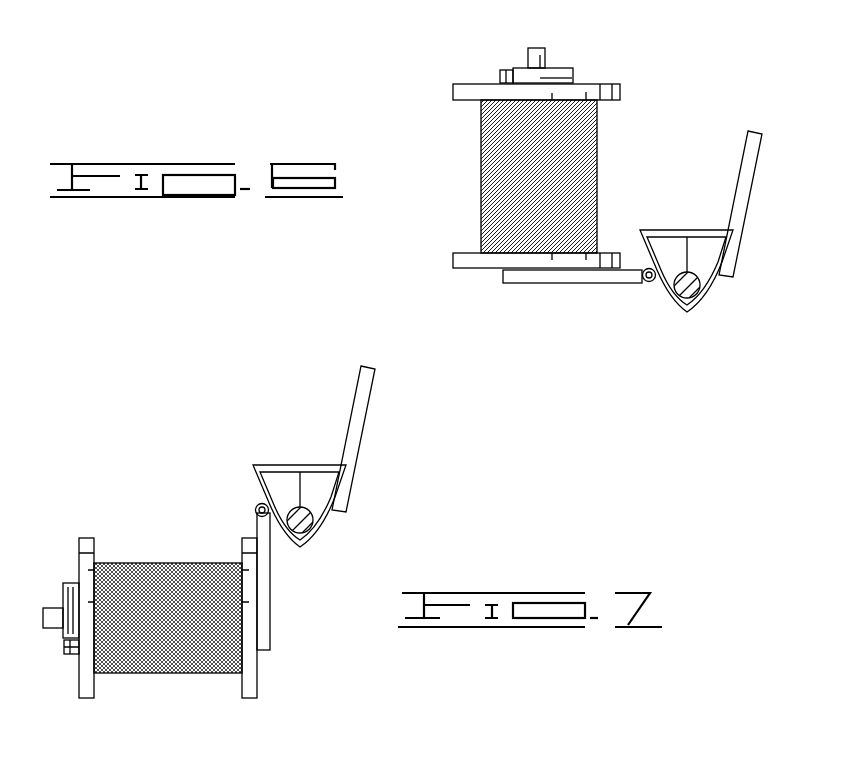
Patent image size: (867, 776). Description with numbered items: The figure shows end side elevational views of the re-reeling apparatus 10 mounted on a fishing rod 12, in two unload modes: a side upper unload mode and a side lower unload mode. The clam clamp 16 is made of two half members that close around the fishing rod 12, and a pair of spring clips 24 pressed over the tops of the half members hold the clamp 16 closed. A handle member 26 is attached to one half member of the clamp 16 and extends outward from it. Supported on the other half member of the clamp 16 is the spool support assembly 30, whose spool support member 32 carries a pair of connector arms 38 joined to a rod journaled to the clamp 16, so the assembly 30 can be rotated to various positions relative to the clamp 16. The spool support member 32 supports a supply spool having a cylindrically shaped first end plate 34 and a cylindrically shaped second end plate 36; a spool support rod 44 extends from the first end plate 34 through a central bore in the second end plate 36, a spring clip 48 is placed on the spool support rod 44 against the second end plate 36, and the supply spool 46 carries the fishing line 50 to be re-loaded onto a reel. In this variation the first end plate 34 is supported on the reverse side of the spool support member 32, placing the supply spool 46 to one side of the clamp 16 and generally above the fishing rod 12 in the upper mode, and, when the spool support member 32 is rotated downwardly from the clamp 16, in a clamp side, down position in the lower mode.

In FIG. 6, the re-reeling apparatus 10 is at (415, 78).
In FIG. 7, the re-reeling apparatus 10 is at (138, 465).
In FIG. 6, the fishing rod 12 is at (690, 295).
In FIG. 7, the fishing rod 12 is at (319, 532).
In FIG. 6, the clam clamp 16 is at (713, 253).
In FIG. 7, the clam clamp 16 is at (329, 503).
In FIG. 6, the spring clips 24 is at (675, 232).
In FIG. 7, the spring clips 24 is at (309, 451).
In FIG. 6, the handle member 26 is at (758, 172).
In FIG. 7, the handle member 26 is at (379, 439).
In FIG. 6, the spool support assembly 30 is at (532, 285).
In FIG. 7, the spool support assembly 30 is at (77, 682).
In FIG. 6, the spool support member 32 is at (597, 285).
In FIG. 7, the spool support member 32 is at (272, 613).
In FIG. 6, the first end plate 34 is at (463, 252).
In FIG. 7, the first end plate 34 is at (258, 682).
In FIG. 6, the second end plate 36 is at (622, 90).
In FIG. 7, the second end plate 36 is at (95, 542).
In FIG. 6, the connector arms 38 is at (637, 288).
In FIG. 7, the connector arms 38 is at (262, 510).
In FIG. 6, the spool support rod 44 is at (528, 55).
In FIG. 7, the spool support rod 44 is at (55, 628).
In FIG. 6, the coil 46 is at (588, 157).
In FIG. 7, the coil 46 is at (185, 662).
In FIG. 6, the spring clip 48 is at (568, 68).
In FIG. 7, the spring clip 48 is at (63, 590).
In FIG. 6, the fishing line 50 is at (497, 167).
In FIG. 7, the fishing line 50 is at (180, 570).